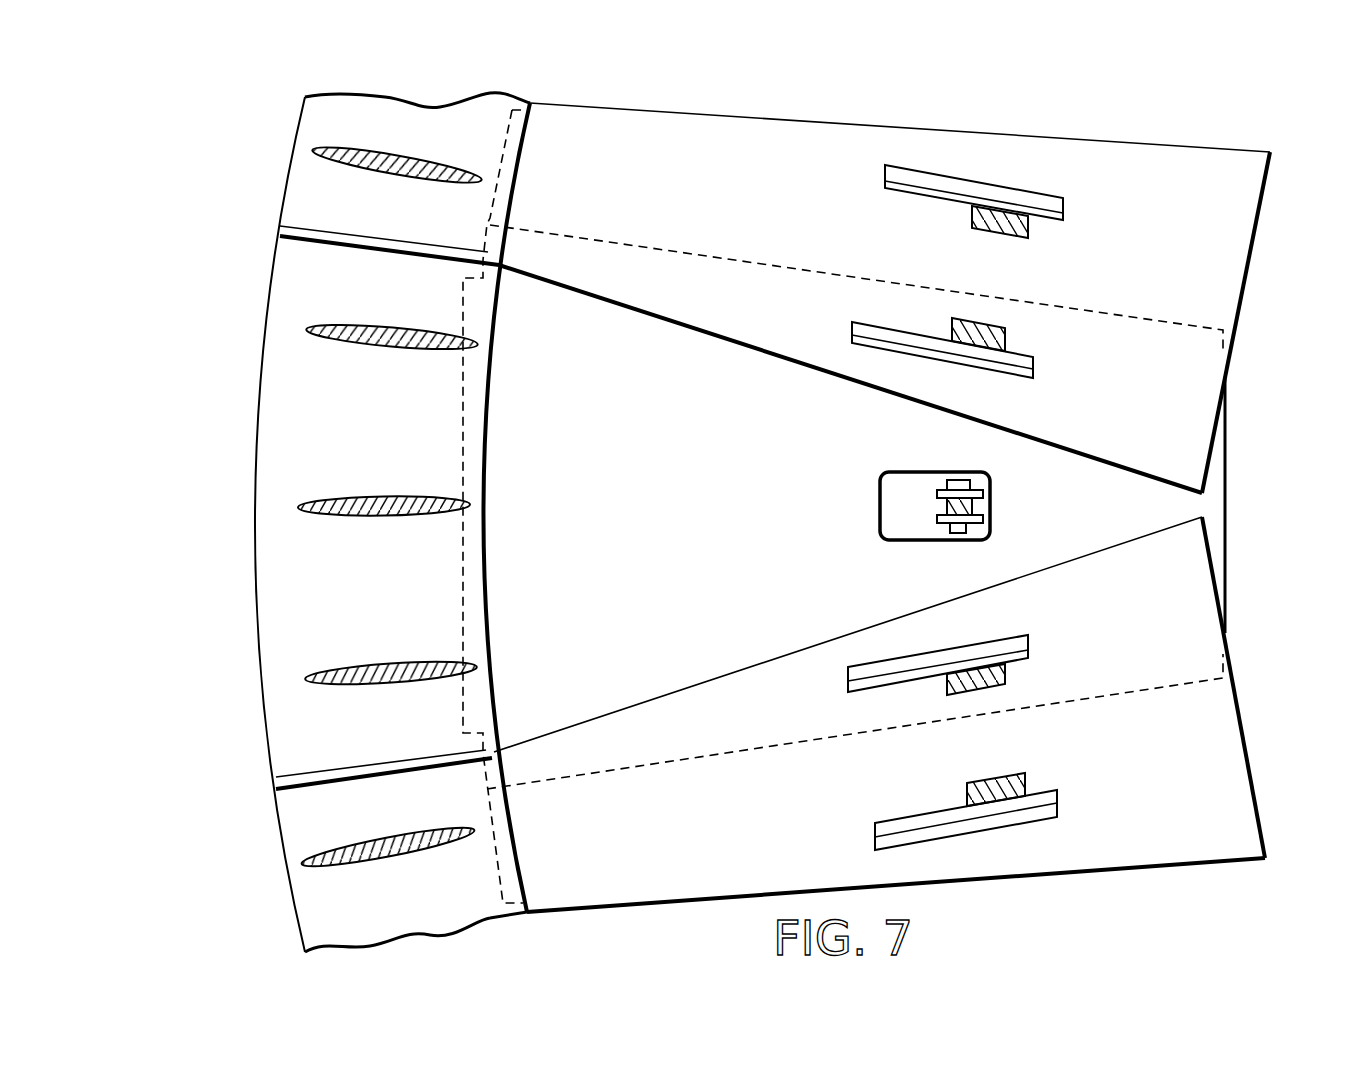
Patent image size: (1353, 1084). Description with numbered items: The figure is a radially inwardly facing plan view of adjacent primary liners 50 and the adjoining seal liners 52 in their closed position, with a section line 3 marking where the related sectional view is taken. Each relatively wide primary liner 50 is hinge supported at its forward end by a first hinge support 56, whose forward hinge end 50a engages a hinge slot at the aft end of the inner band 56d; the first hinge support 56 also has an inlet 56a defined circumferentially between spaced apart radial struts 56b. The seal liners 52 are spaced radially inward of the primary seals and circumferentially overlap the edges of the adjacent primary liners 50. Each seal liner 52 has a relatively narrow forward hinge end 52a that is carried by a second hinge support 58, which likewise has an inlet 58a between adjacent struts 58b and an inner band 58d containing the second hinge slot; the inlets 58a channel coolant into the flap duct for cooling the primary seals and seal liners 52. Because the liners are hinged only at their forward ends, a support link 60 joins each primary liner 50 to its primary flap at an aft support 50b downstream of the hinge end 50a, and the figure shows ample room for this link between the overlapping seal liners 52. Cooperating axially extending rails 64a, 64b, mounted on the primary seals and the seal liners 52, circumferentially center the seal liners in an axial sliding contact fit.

The section line 3- 3 is at (232, 183).
The primary liner 50 is at (844, 506).
The forward hinge end 50a is at (467, 405).
The aft support 50b is at (984, 504).
The seal liner 52 is at (878, 507).
The forward hinge end 52a is at (515, 172).
The first hinge support 56 is at (331, 524).
The inlet 56a is at (347, 446).
The radial strut 56b is at (291, 508).
The inner band 56d is at (258, 612).
The second hinge support 58 is at (385, 514).
The inlet 58a is at (387, 148).
The strut 58b is at (339, 167).
The inner band 58d is at (490, 97).
The support link 60 is at (945, 506).
The rail 64a is at (1015, 234).
The rail 64b is at (953, 491).